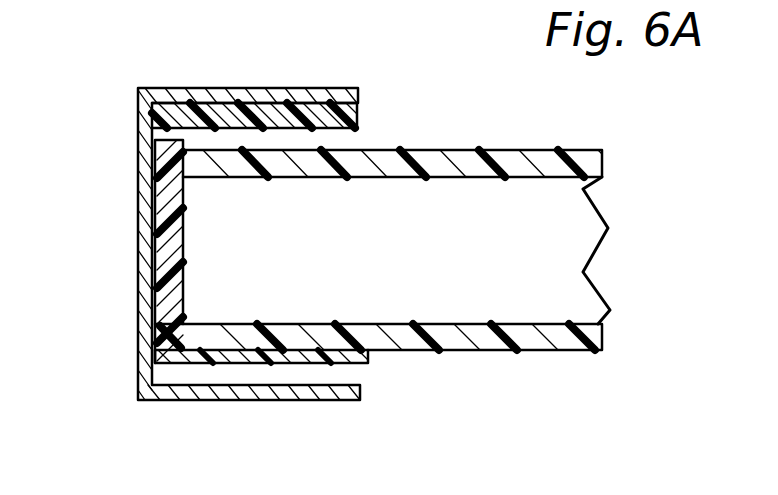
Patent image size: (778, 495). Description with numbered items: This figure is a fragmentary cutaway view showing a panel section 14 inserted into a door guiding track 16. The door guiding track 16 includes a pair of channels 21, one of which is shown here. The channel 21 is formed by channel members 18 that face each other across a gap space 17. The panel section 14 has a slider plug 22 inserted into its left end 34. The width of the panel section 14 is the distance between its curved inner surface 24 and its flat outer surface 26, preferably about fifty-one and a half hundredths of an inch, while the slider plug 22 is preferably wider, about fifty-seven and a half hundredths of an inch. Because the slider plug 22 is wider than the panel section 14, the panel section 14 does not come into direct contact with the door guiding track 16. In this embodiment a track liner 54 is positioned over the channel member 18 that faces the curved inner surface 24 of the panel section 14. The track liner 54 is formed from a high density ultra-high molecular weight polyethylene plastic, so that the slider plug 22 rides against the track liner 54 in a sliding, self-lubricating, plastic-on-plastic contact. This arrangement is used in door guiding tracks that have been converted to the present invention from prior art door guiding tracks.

The panel section 14 is at (592, 372).
The door guiding track 16 is at (140, 419).
The gap space 17 is at (352, 371).
The channel members 18 is at (239, 97).
The channel 21 is at (150, 353).
The slider plug 22 is at (165, 268).
The curved inner surface 24 is at (428, 150).
The flat outer surface 26 is at (510, 350).
The left end 34 is at (202, 208).
The track liner 54 is at (315, 110).